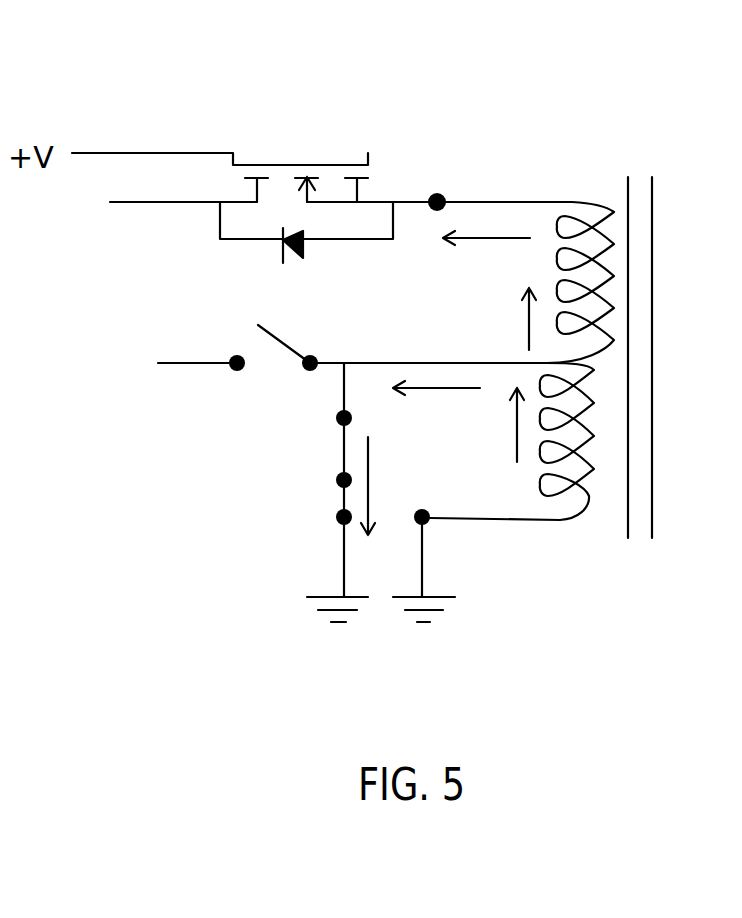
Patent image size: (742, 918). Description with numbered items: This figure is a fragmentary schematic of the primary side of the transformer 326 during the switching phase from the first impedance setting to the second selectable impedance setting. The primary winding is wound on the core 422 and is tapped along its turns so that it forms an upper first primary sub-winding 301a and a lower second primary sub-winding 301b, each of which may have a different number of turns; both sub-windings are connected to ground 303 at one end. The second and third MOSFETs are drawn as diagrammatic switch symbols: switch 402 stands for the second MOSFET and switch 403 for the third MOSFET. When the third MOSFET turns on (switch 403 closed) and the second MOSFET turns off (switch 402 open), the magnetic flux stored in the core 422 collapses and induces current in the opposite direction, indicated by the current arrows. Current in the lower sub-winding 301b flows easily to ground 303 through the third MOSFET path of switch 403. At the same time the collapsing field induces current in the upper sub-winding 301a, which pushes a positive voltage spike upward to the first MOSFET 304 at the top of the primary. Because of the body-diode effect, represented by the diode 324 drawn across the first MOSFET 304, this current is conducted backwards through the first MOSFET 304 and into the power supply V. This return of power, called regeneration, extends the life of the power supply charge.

The first MOSFET 304 is at (317, 145).
The diode 324 is at (273, 258).
The first primary sub-winding 301a is at (603, 195).
The second primary sub-winding 301b is at (510, 493).
The core 422 is at (652, 160).
The transformer 326 is at (632, 560).
The switch 402 is at (247, 332).
The switch 403 is at (335, 450).
The ground 303 is at (335, 635).